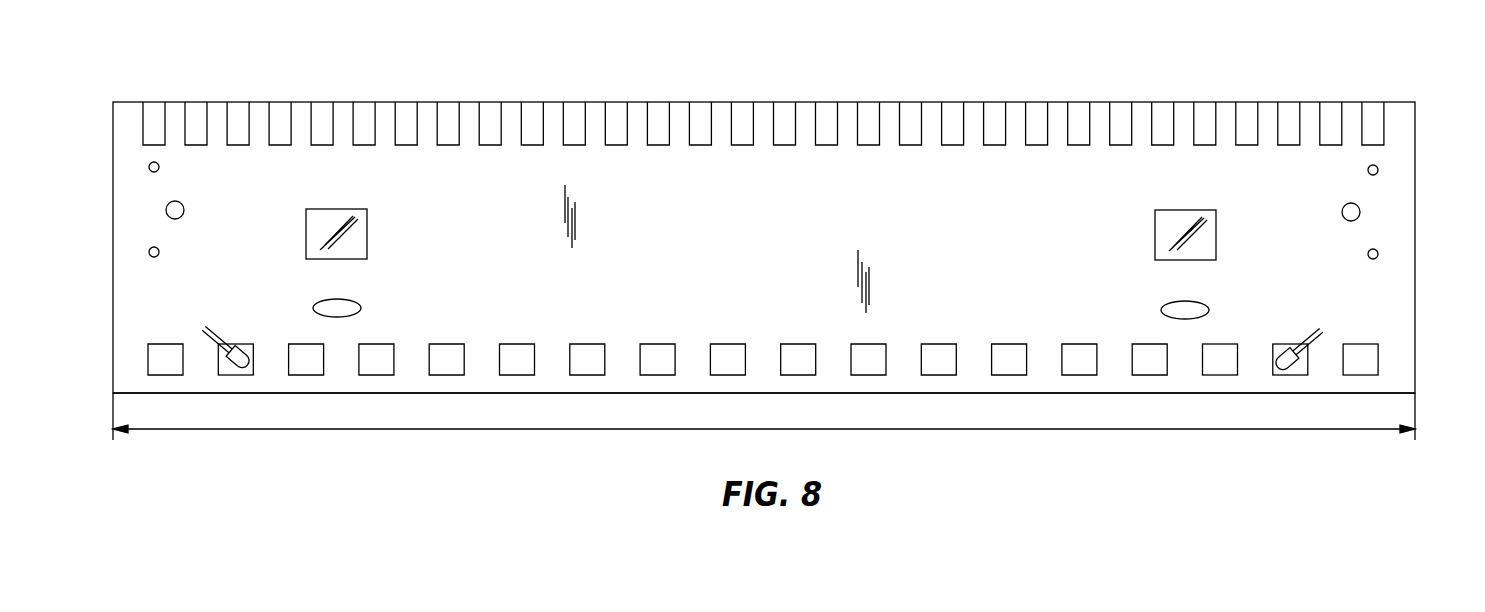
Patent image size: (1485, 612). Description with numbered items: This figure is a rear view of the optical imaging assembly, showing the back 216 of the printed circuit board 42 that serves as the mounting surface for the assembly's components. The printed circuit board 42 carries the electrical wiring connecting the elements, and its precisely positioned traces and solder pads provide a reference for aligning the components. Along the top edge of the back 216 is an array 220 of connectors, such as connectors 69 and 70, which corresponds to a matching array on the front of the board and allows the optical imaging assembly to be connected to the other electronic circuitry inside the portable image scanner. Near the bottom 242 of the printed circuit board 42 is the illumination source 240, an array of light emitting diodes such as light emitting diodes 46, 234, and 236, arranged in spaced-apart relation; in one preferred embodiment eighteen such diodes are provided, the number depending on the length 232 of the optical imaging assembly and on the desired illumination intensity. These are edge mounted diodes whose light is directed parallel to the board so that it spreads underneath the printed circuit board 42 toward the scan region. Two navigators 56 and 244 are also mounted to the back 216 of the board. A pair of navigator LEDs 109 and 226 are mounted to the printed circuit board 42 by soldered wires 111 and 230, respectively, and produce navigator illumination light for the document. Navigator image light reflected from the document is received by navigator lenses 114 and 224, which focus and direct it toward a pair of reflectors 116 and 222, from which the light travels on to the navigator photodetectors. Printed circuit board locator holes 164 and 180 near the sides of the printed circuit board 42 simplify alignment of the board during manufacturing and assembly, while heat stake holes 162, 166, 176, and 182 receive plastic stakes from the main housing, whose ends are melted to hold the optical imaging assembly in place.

The printed circuit board 42 is at (1415, 168).
The light emitting diode 46 is at (1360, 375).
The navigator 56 is at (1147, 200).
The connector 69 is at (1340, 102).
The connector 70 is at (1376, 102).
The navigator LED 109 is at (1293, 332).
The soldered wires 111 is at (1280, 348).
The navigator lens 114 is at (1170, 304).
The reflector 116 is at (1155, 232).
The heat stake hole 162 is at (1368, 170).
The printed circuit board locator hole 164 is at (1342, 212).
The heat stake hole 166 is at (1368, 254).
The heat stake hole 176 is at (159, 167).
The printed circuit board locator hole 180 is at (184, 210).
The heat stake hole 182 is at (159, 252).
The back of the printed circuit board 216 is at (797, 241).
The array of connectors 220 is at (801, 96).
The reflector 222 is at (367, 232).
The navigator lens 224 is at (358, 304).
The navigator LED 226 is at (242, 330).
The soldered wires 230 is at (248, 347).
The length of the optical imaging assembly 232 is at (470, 430).
The light emitting diode 234 is at (1294, 361).
The light emitting diode 236 is at (1218, 375).
The illumination source 240 is at (804, 360).
The bottom of the printed circuit board 242 is at (820, 394).
The navigator 244 is at (297, 200).